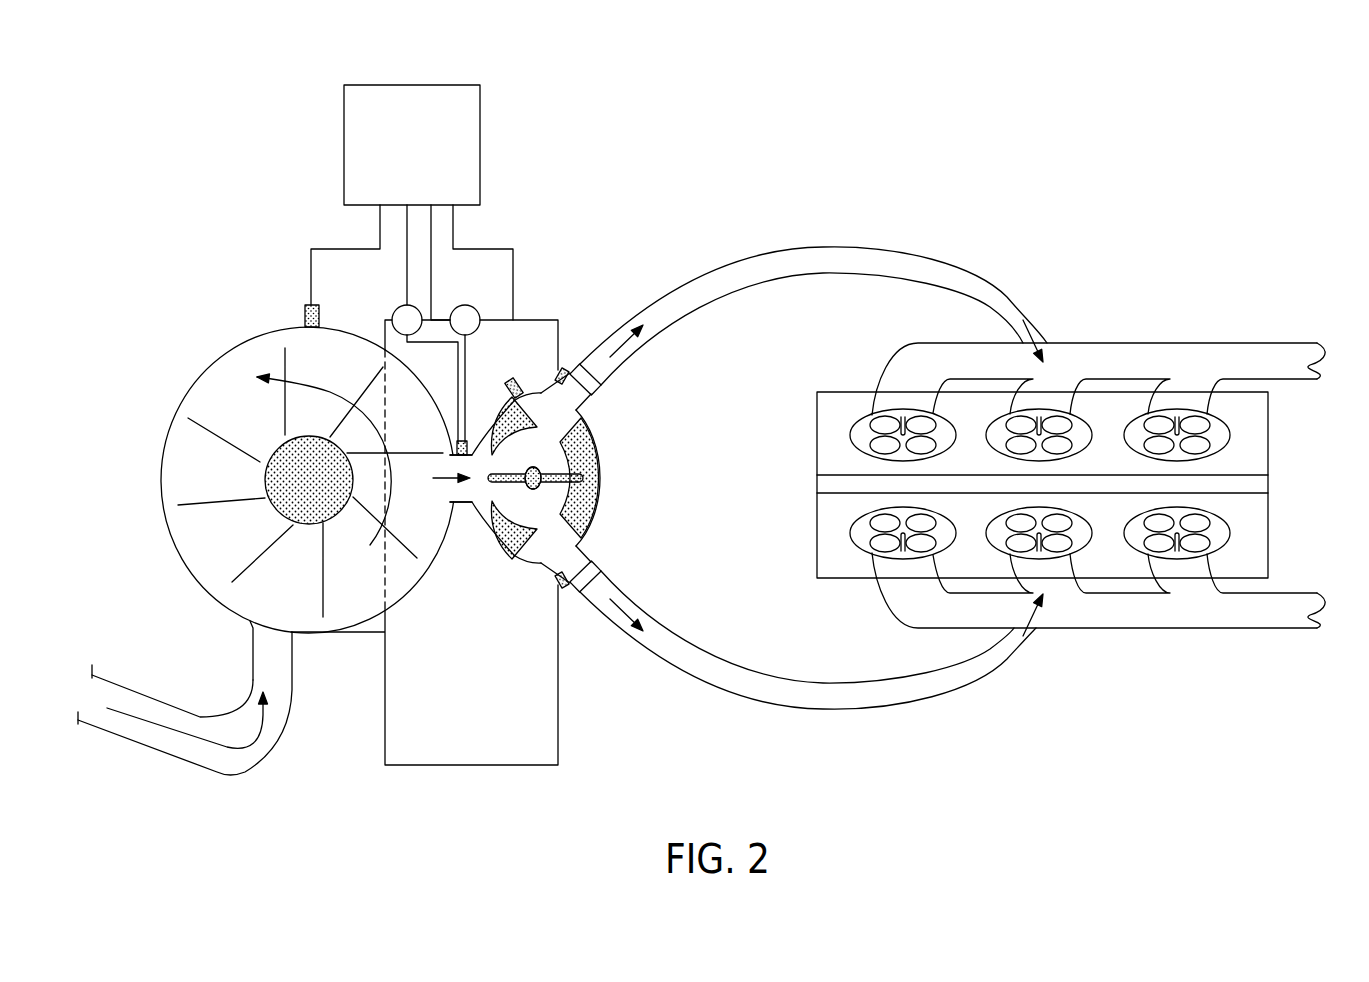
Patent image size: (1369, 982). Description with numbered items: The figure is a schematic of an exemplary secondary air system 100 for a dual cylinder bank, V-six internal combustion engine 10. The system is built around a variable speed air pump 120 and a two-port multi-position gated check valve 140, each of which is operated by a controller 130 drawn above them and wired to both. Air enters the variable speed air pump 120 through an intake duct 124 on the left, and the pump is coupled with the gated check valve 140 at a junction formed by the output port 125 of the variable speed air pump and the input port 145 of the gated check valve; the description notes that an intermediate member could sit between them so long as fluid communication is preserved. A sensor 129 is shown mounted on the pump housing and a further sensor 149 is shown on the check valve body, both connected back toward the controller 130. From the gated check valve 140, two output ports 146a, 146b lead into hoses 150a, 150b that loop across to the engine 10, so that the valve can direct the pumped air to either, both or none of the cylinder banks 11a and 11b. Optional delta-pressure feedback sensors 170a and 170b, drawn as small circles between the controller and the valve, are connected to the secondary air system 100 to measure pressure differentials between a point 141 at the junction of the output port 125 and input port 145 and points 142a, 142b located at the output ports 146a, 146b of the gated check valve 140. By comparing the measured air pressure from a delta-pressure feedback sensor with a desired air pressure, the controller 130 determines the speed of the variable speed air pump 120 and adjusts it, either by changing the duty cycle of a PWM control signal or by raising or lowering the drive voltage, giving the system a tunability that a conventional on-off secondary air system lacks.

The secondary air system 100 is at (1163, 163).
The internal combustion engine 10 is at (823, 484).
The cylinder bank 11a is at (823, 435).
The cylinder bank 11b is at (823, 543).
The variable speed air pump 120 is at (190, 575).
The intake duct 124 is at (87, 687).
The output port 125 is at (459, 516).
The input port 145 is at (459, 516).
The sensor 129 is at (305, 313).
The controller 130 is at (483, 148).
The gated check valve 140 is at (512, 562).
The point 141 is at (467, 435).
The point 142a is at (567, 368).
The point 142b is at (564, 588).
The output port 146a is at (592, 547).
The output port 146b is at (590, 411).
The sensor 149 is at (515, 373).
The hose 150a is at (845, 247).
The hose 150b is at (835, 712).
The delta-pressure feedback sensor 170a is at (393, 311).
The delta-pressure feedback sensor 170b is at (478, 311).